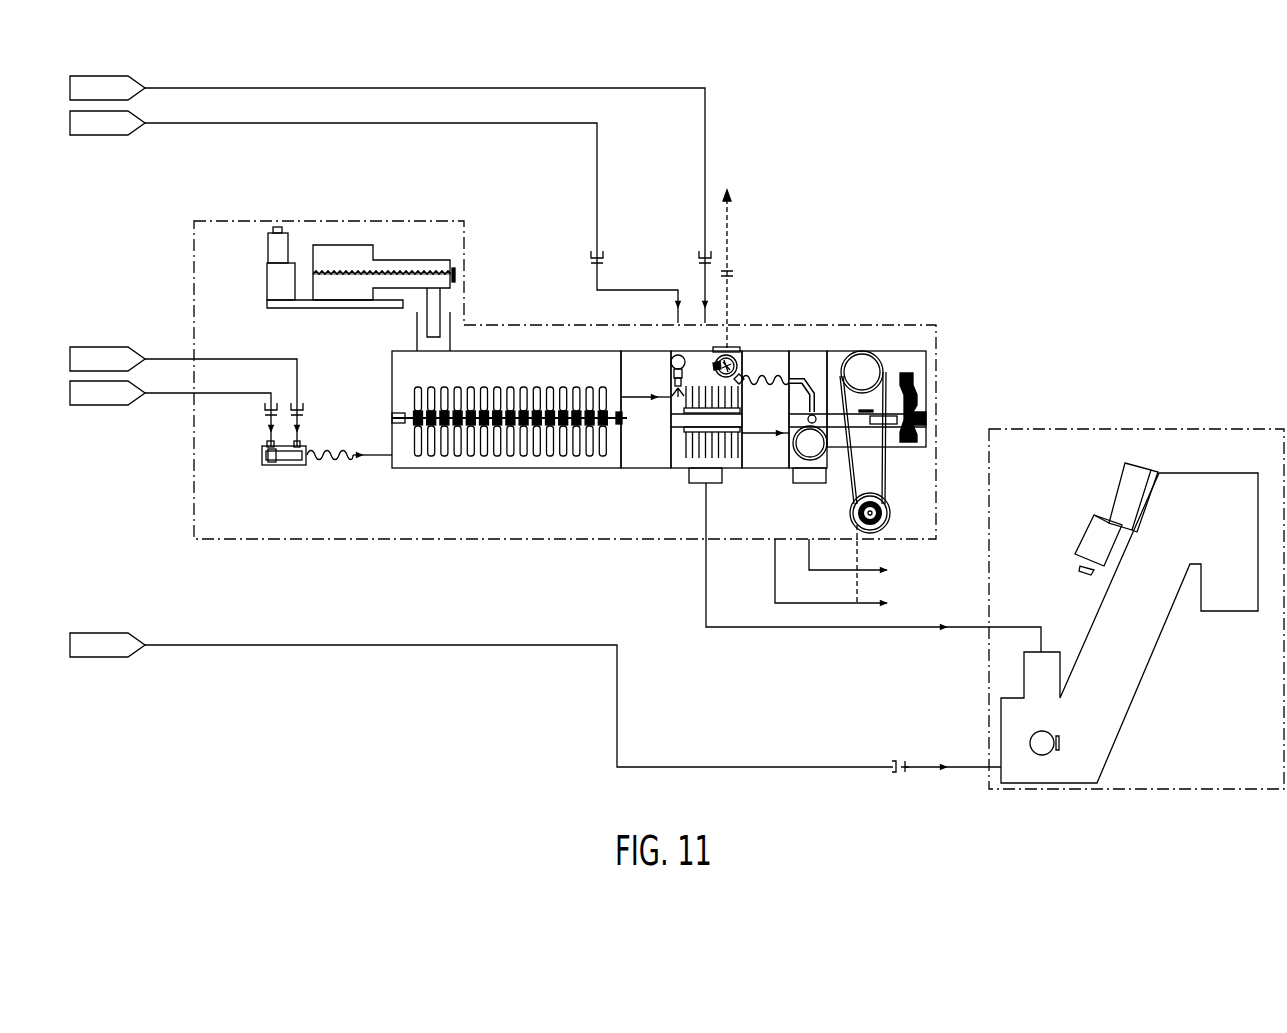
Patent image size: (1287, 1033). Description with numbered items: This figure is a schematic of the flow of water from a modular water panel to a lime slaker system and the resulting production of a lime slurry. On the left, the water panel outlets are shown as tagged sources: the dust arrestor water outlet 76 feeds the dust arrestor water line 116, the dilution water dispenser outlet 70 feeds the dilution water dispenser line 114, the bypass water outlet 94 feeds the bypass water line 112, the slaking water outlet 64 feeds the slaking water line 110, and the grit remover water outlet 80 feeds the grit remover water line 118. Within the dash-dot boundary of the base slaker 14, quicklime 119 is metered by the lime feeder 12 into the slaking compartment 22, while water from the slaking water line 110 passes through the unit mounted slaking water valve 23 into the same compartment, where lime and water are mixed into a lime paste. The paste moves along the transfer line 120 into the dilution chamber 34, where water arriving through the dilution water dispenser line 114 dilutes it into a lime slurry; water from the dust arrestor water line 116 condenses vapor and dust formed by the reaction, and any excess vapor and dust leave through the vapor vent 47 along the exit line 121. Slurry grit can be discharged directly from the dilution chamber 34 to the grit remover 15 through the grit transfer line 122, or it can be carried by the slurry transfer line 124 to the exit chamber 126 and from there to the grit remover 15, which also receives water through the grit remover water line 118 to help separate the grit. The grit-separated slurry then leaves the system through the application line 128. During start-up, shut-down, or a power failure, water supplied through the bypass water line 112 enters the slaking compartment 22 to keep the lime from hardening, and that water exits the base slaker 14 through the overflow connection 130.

The lime feeder 12 is at (565, 343).
The base slaker 14 is at (848, 349).
The grit remover 15 is at (1227, 454).
The slaking compartment 22 is at (510, 468).
The unit mounted slaking water valve 23 is at (286, 466).
The dilution chamber 34 is at (730, 468).
The vapor vent 47 is at (727, 347).
The slaking water outlet 64 is at (107, 393).
The dilution water dispenser outlet 70 is at (107, 123).
The dust arrestor water outlet 76 is at (107, 88).
The grit remover water outlet 80 is at (107, 645).
The bypass water outlet 94 is at (107, 359).
The slaking water line 110 is at (160, 393).
The bypass water line 112 is at (178, 359).
The dilution water dispenser line 114 is at (162, 124).
The dust arrestor water line 116 is at (172, 88).
The grit remover water line 118 is at (273, 645).
The quicklime 119 is at (333, 221).
The transfer line 120 is at (638, 397).
The exit line 121 is at (727, 214).
The grit transfer line 122 is at (705, 588).
The slurry transfer line 124 is at (757, 430).
The exit chamber 126 is at (806, 470).
The application line 128 is at (885, 569).
The overflow connection 130 is at (885, 603).